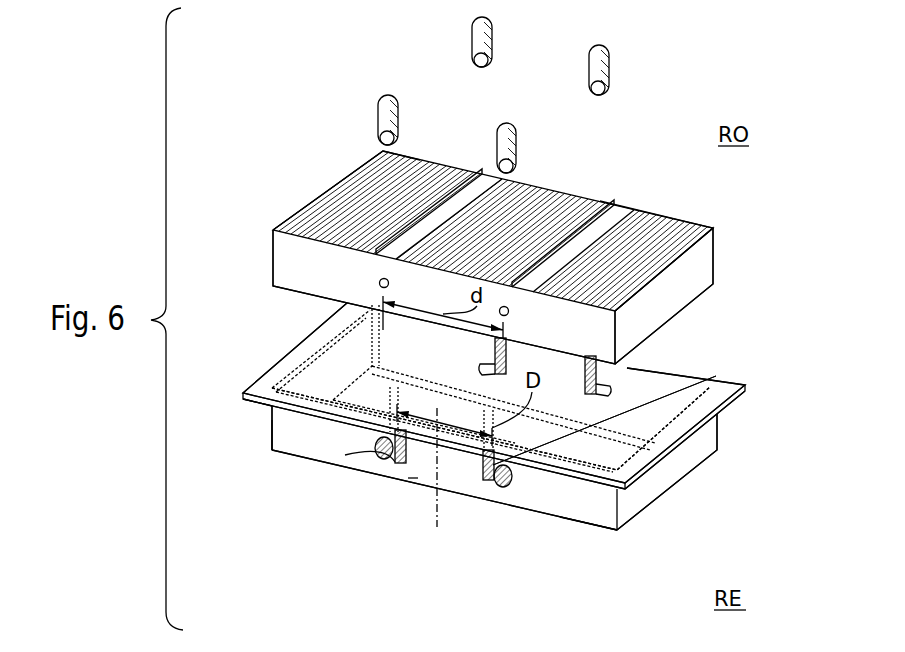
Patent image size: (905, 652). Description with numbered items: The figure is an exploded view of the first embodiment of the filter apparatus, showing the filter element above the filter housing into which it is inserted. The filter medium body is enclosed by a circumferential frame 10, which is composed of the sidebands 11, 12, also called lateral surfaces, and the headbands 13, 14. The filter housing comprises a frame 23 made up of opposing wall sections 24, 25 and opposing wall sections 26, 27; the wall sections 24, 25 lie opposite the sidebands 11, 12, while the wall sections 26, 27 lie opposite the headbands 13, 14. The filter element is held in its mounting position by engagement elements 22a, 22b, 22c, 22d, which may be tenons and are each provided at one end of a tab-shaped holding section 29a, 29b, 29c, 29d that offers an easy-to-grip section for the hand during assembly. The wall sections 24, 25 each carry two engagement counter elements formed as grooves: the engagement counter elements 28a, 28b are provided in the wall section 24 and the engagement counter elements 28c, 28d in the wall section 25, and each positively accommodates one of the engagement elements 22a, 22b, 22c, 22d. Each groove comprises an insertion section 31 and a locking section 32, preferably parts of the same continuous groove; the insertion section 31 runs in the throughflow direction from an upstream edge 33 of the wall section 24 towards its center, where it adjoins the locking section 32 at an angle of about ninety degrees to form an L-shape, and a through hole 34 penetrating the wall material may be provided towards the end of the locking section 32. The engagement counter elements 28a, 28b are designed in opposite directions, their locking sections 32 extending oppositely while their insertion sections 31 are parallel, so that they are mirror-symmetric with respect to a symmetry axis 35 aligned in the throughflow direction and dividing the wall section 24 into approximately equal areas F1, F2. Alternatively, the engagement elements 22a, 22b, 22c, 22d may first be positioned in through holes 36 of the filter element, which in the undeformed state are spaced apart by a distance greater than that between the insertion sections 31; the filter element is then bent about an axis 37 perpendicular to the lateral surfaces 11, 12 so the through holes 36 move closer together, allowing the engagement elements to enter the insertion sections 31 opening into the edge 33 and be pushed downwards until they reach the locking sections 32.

The circumferential frame 10 is at (719, 256).
The sideband 11 is at (276, 268).
The sideband 12 is at (675, 222).
The headband 13 is at (700, 288).
The headband 14 is at (290, 213).
The engagement element 22a is at (378, 140).
The engagement element 22b is at (498, 166).
The engagement element 22c is at (492, 55).
The engagement element 22d is at (612, 93).
The frame 23 is at (674, 494).
The wall section 24 is at (462, 495).
The wall section 25 is at (744, 383).
The wall section 26 is at (703, 452).
The wall section 27 is at (272, 418).
The engagement counter element 28a is at (388, 476).
The engagement counter element 28b is at (514, 500).
The engagement counter element 28c is at (483, 362).
The engagement counter element 28d is at (600, 388).
The holding section 29a is at (378, 106).
The holding section 29b is at (514, 146).
The holding section 29c is at (472, 27).
The holding section 29d is at (590, 85).
The insertion section 31 is at (493, 465).
The locking section 32 is at (382, 468).
The upstream edge 33 is at (585, 470).
The through hole 34 is at (385, 450).
The symmetry axis 35 is at (438, 503).
The through hole 36 is at (378, 283).
The axis 37 is at (578, 192).
The area F1 is at (272, 447).
The area F2 is at (585, 522).